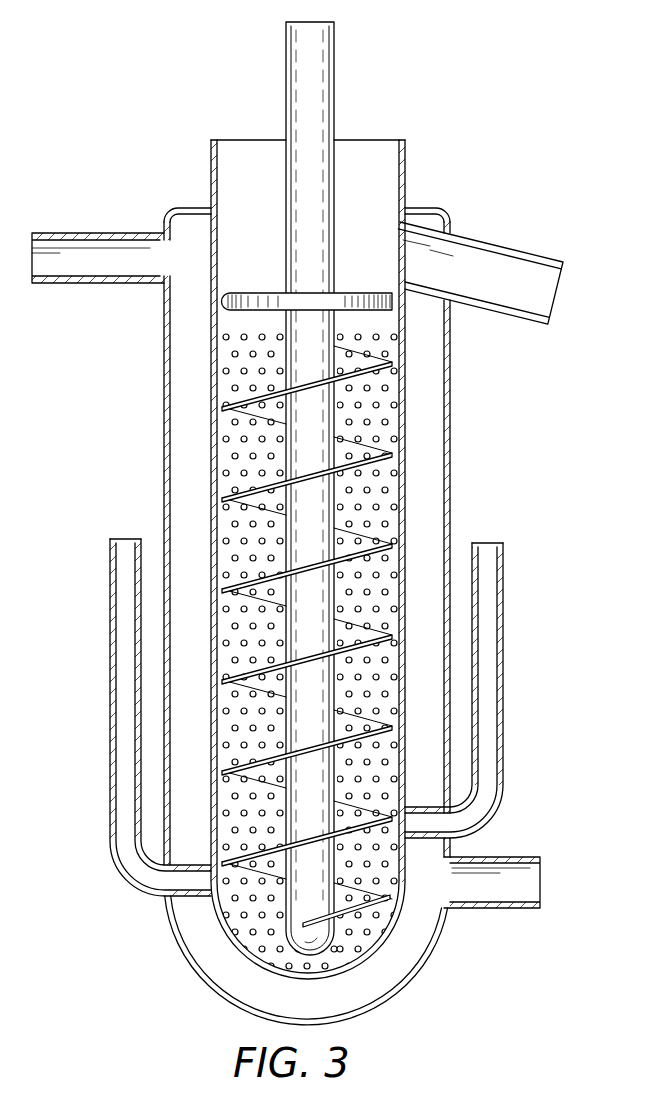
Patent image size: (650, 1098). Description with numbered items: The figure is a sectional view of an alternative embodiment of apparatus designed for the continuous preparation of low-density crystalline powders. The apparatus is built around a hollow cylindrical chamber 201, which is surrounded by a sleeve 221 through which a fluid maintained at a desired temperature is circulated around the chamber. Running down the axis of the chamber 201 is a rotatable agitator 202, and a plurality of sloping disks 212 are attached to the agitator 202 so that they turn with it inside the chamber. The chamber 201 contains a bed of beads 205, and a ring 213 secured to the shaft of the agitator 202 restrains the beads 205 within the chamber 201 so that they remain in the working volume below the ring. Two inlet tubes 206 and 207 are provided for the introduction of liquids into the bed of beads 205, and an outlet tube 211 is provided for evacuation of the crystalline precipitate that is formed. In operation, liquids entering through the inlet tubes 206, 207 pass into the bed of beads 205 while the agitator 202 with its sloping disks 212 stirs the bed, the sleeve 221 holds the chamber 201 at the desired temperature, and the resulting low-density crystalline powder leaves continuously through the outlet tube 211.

The hollow cylindrical chamber 201 is at (406, 153).
The rotatable agitator 202 is at (333, 58).
The beads 205 is at (397, 484).
The inlet tube 206 is at (110, 617).
The inlet tube 207 is at (503, 626).
The outlet tube 211 is at (553, 296).
The sloping disks 212 is at (220, 486).
The ring 213 is at (222, 299).
The sleeve 221 is at (451, 432).